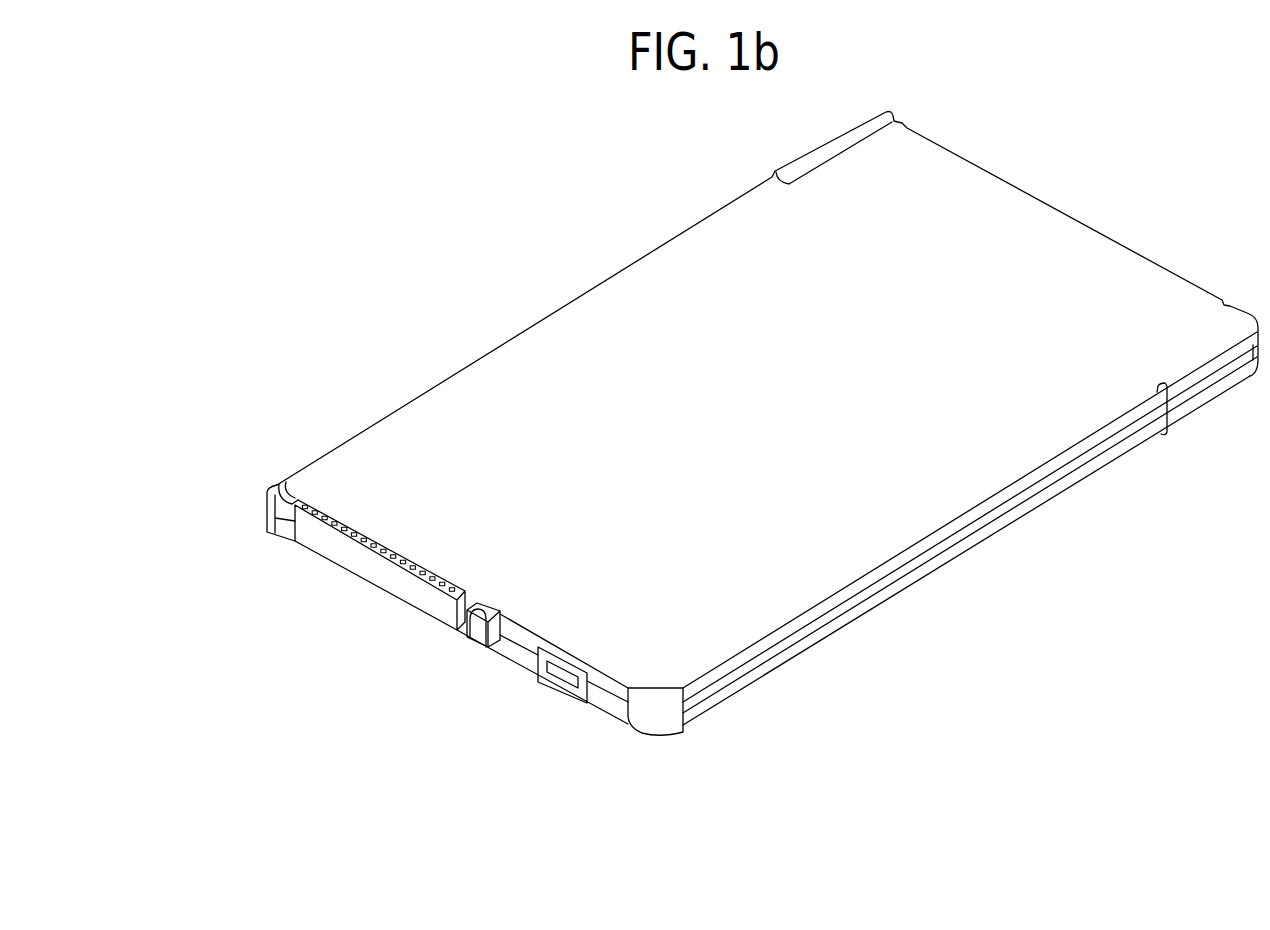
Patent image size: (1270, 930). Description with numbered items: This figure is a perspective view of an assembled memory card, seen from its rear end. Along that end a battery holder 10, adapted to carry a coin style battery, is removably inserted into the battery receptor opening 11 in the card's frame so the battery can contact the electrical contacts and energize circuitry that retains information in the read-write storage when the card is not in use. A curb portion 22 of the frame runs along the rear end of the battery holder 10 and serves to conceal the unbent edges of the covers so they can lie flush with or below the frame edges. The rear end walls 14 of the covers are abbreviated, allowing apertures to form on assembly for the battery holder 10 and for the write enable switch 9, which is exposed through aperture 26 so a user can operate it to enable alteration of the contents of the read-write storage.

The write enable switch 9 is at (567, 683).
The battery holder 10 is at (378, 577).
The battery receptor opening 11 is at (413, 630).
The wall at the rear end 14 is at (273, 532).
The curb portion 22 is at (331, 520).
The aperture 26 is at (542, 692).